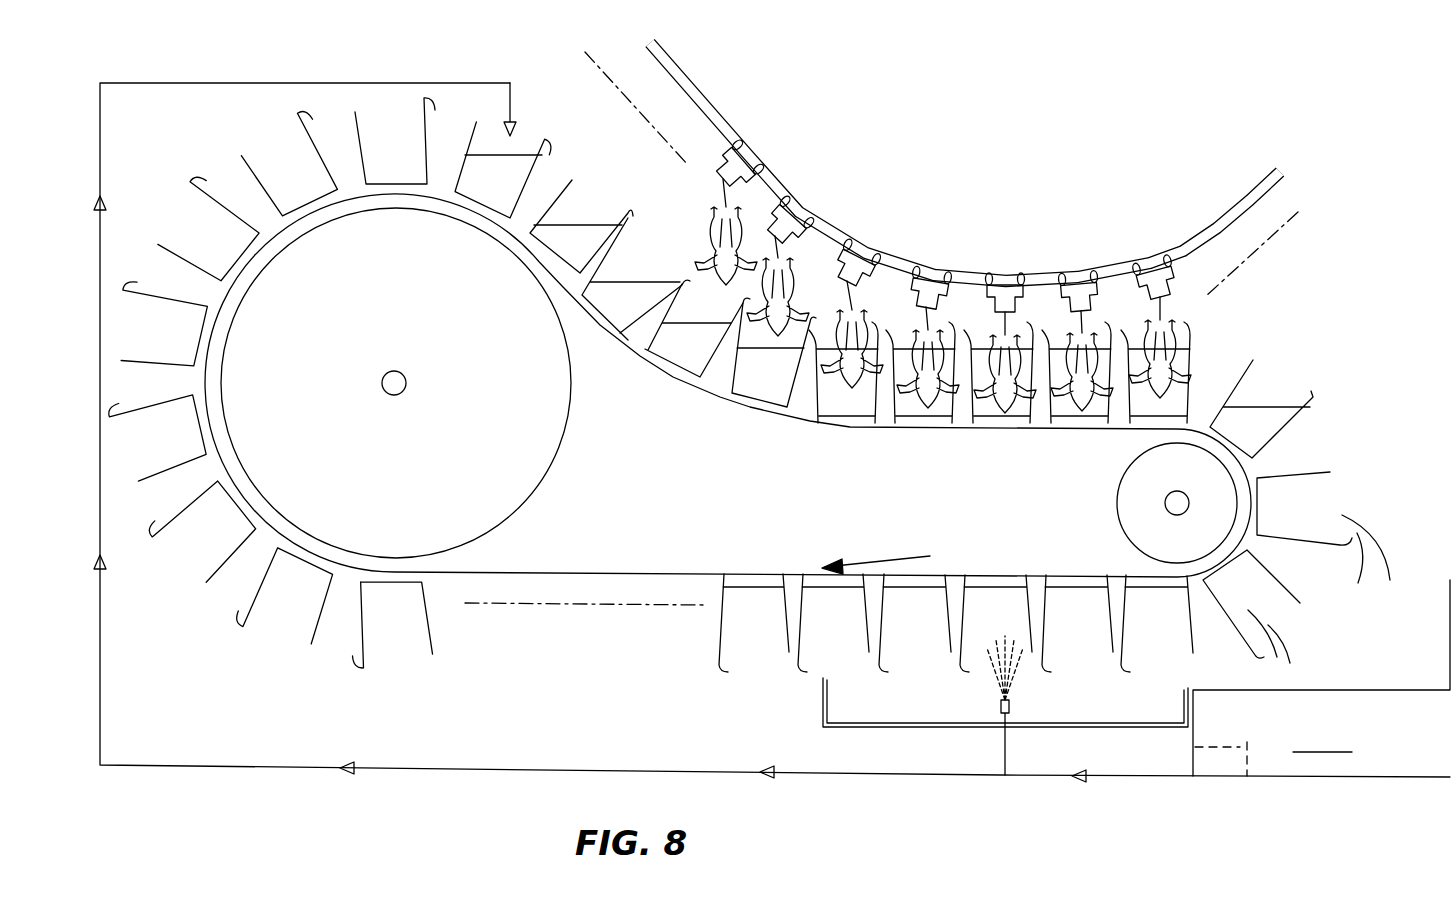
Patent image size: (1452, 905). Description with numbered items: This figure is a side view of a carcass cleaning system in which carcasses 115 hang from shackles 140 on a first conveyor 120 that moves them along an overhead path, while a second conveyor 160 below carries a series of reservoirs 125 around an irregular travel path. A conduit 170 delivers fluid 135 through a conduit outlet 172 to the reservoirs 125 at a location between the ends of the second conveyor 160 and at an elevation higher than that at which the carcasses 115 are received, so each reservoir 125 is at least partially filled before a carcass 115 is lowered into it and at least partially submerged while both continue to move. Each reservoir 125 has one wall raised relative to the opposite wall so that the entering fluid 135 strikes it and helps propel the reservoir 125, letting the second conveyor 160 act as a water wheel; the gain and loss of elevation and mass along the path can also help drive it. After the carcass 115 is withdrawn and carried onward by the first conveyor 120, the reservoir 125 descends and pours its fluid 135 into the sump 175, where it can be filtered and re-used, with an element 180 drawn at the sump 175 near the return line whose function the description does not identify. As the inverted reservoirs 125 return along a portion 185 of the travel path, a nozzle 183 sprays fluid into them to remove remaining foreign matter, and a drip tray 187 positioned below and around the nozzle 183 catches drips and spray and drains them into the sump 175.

The carcass 115 is at (723, 258).
The first conveyor 120 is at (1225, 222).
The reservoir 125 is at (706, 636).
The fluid 135 is at (1258, 418).
The shackle 140 is at (1165, 316).
The second conveyor 160 is at (713, 400).
The conduit 170 is at (105, 662).
The conduit outlet 172 is at (515, 112).
The sump 175 is at (1321, 678).
The valve 180 is at (1248, 778).
The nozzle 183 is at (1012, 709).
The portion of the second travel path 185 is at (876, 548).
The drip tray 187 is at (1155, 727).